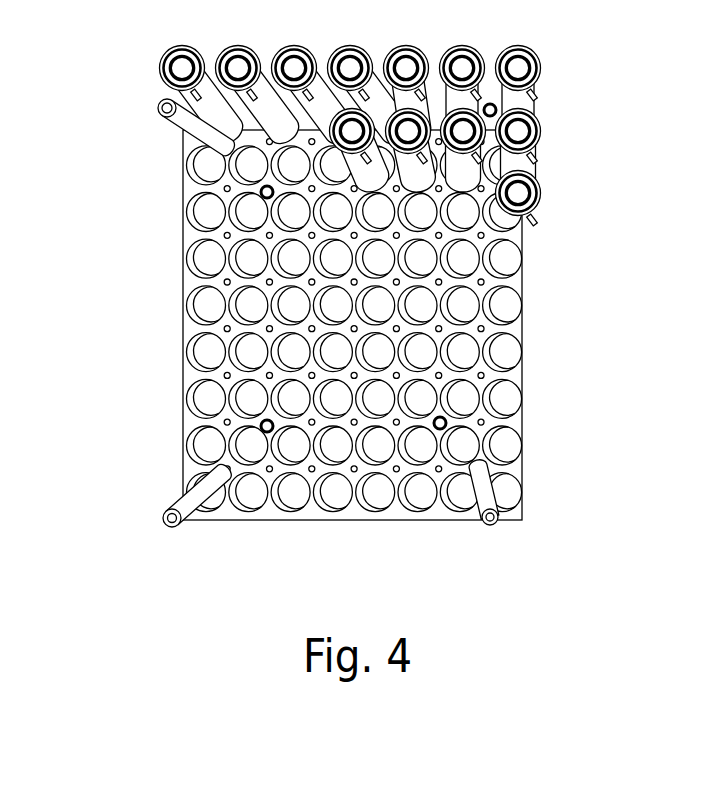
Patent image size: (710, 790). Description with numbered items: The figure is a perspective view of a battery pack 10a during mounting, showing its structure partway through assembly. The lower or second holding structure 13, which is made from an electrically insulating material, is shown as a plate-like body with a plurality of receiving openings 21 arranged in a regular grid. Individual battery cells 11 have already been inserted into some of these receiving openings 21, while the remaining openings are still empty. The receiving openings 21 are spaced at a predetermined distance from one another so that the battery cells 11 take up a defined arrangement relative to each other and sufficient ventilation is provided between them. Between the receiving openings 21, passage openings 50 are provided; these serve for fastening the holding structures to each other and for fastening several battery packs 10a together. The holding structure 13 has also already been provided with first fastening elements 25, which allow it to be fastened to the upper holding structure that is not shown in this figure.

The battery pack 10a is at (357, 293).
The battery cell 11 is at (533, 190).
The second holding structure 13 is at (183, 187).
The receiving opening 21 is at (505, 315).
The first fastening element 25 is at (498, 521).
The passage opening 50 is at (522, 422).